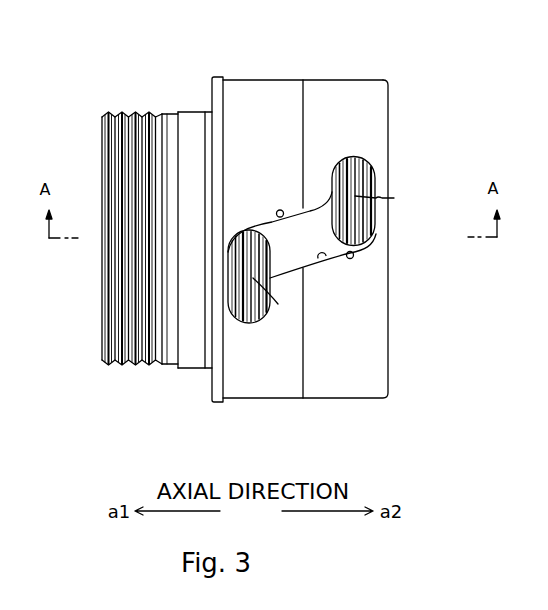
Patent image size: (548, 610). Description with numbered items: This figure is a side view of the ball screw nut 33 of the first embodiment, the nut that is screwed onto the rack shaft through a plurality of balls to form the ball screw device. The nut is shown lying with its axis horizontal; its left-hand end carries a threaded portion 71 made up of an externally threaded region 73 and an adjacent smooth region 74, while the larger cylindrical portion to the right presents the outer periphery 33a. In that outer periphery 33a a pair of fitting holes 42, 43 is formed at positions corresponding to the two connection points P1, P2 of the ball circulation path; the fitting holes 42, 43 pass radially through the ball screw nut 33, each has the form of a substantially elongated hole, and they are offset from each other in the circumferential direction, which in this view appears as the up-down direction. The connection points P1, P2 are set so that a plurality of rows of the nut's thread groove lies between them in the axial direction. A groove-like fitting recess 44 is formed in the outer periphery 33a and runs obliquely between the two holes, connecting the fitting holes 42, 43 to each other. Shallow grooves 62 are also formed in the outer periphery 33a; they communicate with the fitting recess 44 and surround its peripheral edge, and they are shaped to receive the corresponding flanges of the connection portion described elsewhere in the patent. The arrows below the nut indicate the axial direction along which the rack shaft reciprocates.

The ball screw nut 33 is at (430, 70).
The outer periphery 33a is at (354, 80).
The threaded portion 71 is at (125, 78).
The male thread 73 is at (128, 113).
The non-threaded portion 74 is at (192, 112).
The fitting hole 42 is at (344, 157).
The fitting hole 43 is at (264, 320).
The fitting recess 44 is at (324, 259).
The shallow grooves 62 is at (280, 210).
The connection point P1 is at (388, 197).
The connection point P2 is at (277, 298).